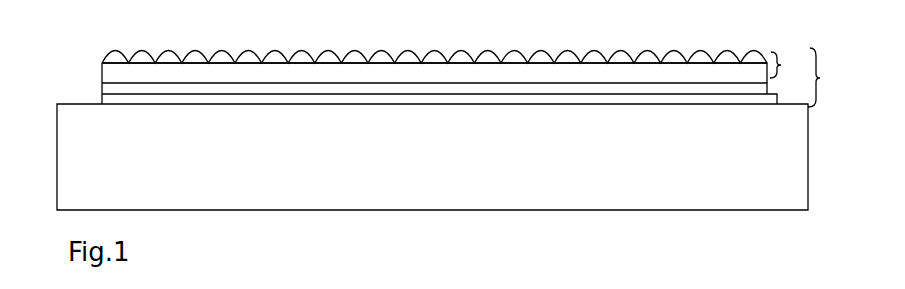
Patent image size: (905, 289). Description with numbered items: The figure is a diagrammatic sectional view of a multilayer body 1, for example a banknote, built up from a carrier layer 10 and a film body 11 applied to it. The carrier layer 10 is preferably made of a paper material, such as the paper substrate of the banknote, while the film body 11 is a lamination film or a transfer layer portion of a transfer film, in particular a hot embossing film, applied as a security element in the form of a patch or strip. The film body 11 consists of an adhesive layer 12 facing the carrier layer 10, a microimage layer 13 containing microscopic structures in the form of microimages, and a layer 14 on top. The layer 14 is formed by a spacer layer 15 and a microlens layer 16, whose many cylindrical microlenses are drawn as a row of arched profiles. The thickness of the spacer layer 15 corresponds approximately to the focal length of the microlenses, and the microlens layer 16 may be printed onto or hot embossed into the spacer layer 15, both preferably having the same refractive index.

The multilayer body 1 is at (520, 44).
The carrier layer 10 is at (58, 160).
The film body 11 is at (830, 77).
The adhesive layer 12 is at (102, 98).
The microimage layer 13 is at (103, 89).
The layer 14 is at (788, 65).
The spacer layer 15 is at (104, 72).
The microlens layer 16 is at (106, 59).